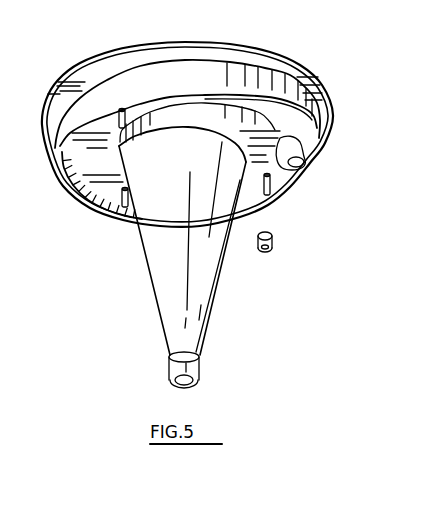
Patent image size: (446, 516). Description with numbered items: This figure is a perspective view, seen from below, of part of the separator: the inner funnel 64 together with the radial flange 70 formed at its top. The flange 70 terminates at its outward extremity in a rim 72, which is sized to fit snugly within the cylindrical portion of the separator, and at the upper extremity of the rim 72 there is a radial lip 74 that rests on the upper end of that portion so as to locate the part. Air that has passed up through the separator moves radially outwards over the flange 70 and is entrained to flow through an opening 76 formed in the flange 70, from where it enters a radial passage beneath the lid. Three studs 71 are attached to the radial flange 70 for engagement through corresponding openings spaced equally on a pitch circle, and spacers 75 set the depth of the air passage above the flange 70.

The funnel 64 is at (204, 300).
The flange 70 is at (77, 160).
The studs 71 is at (128, 112).
The rim 72 is at (56, 134).
The radial lip 74 is at (105, 62).
The spacers 75 is at (274, 240).
The opening 76 is at (301, 163).